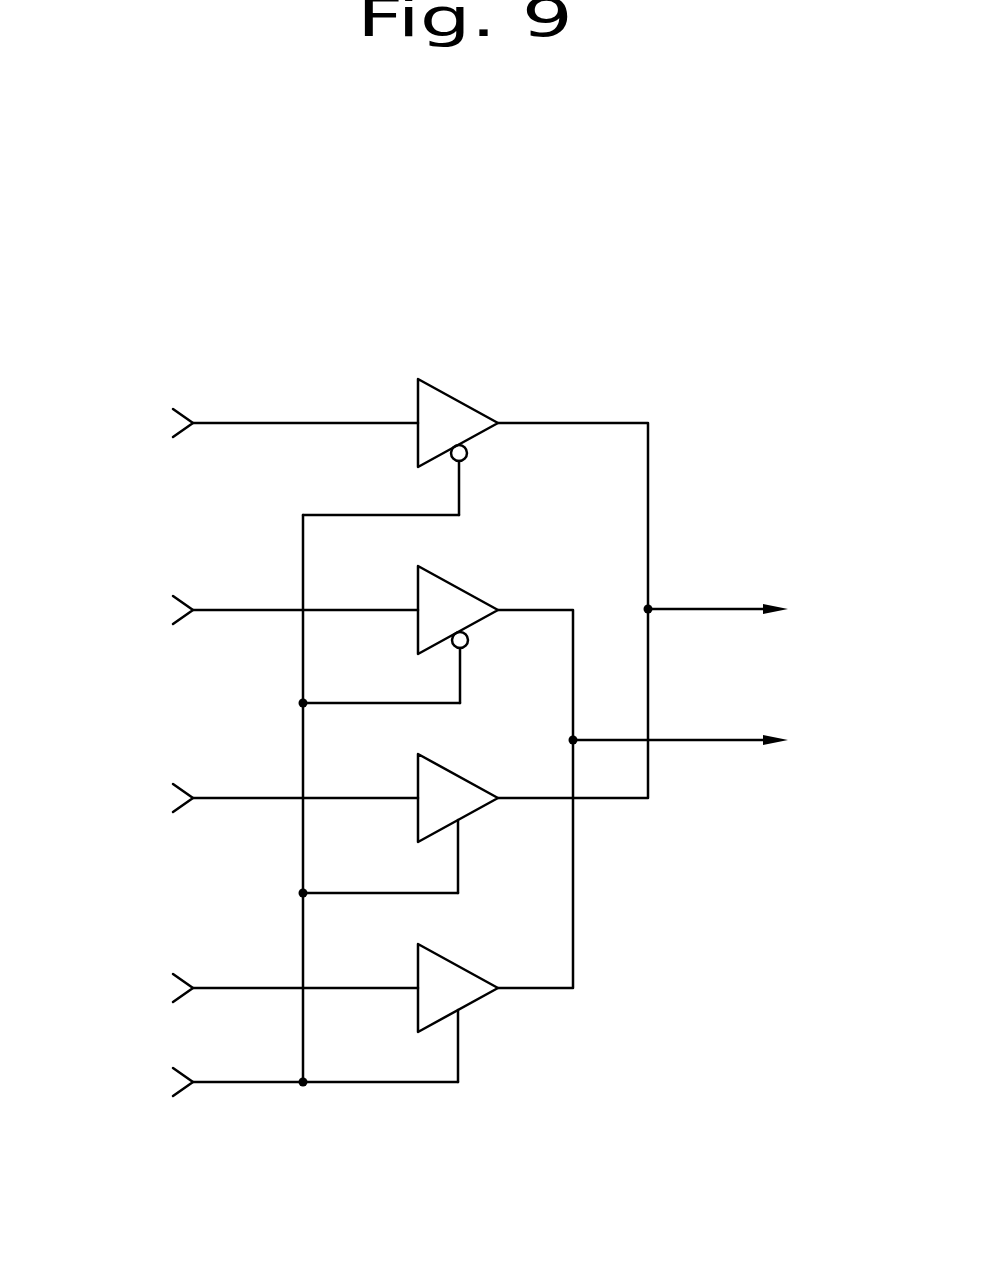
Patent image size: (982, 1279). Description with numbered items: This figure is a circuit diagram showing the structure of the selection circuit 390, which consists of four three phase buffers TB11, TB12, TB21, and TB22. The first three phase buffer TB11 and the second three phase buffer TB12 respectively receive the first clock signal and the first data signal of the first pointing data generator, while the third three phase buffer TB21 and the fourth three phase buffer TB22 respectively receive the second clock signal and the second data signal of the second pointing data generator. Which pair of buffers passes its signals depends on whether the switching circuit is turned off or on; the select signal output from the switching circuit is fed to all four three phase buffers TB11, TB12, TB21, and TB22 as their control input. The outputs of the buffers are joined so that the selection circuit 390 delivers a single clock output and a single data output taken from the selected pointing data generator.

The selection circuit 390 is at (785, 222).
The first three phase buffer TB11 is at (455, 398).
The second three phase buffer TB12 is at (497, 563).
The third three phase buffer TB21 is at (498, 750).
The fourth three phase buffer TB22 is at (498, 940).